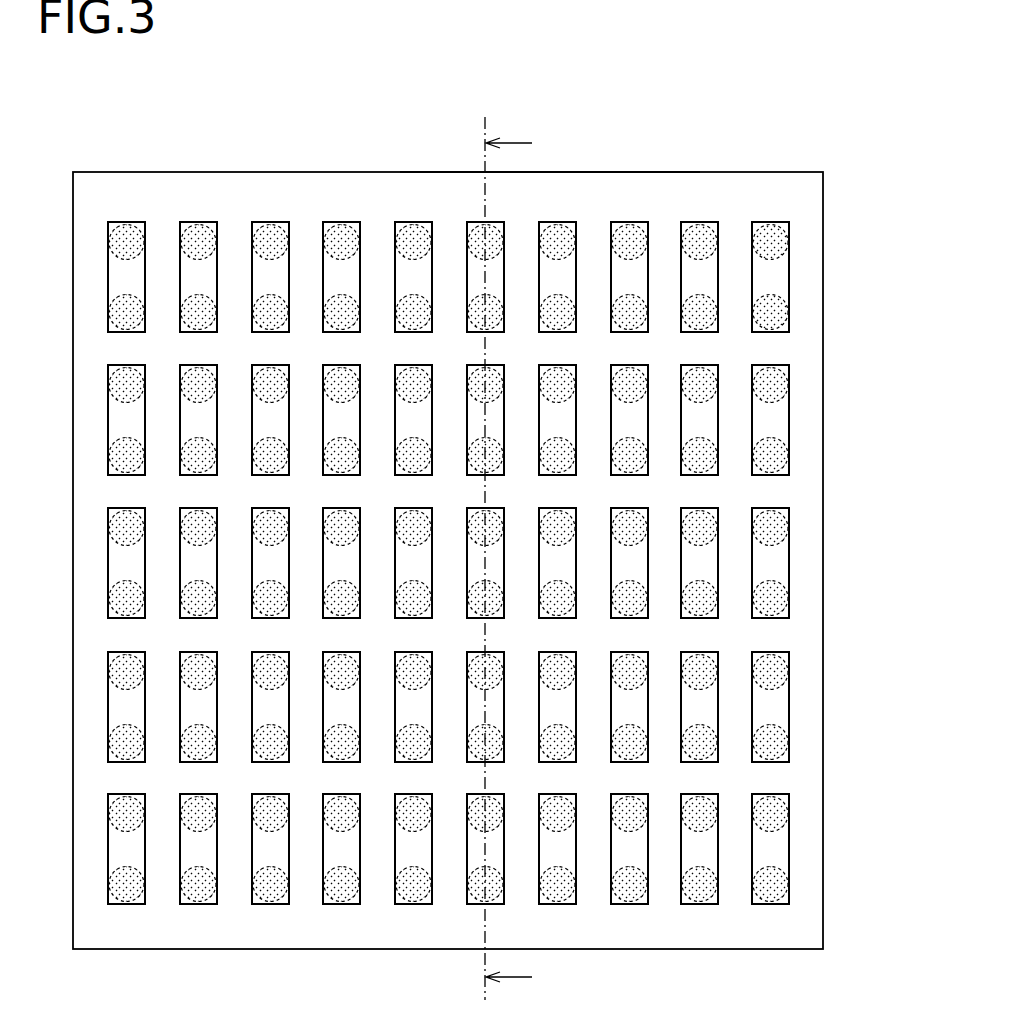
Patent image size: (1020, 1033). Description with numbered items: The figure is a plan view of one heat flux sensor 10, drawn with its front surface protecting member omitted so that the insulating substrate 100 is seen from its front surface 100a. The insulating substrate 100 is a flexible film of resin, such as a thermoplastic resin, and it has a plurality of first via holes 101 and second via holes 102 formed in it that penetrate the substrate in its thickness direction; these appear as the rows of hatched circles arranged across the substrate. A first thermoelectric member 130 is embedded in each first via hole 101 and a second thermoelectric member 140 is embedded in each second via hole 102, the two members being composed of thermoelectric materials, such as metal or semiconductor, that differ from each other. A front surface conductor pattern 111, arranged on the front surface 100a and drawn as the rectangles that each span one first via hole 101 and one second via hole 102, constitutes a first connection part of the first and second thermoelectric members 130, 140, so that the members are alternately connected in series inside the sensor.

The heat flux sensor 10 is at (77, 140).
The insulating substrate 100 is at (238, 172).
The front surface 100a is at (574, 198).
The second via hole 102 is at (790, 242).
The second thermoelectric member 140 is at (788, 262).
The front surface conductor pattern 111 is at (782, 279).
The first via hole 101 is at (790, 320).
The first thermoelectric member 130 is at (788, 334).